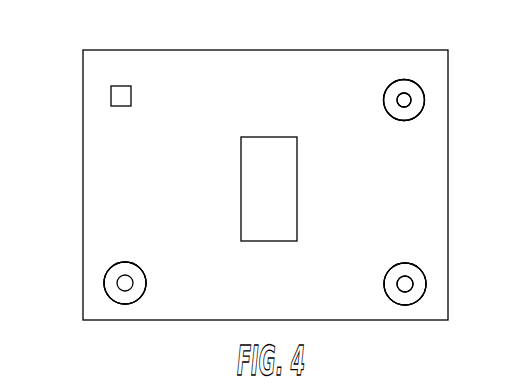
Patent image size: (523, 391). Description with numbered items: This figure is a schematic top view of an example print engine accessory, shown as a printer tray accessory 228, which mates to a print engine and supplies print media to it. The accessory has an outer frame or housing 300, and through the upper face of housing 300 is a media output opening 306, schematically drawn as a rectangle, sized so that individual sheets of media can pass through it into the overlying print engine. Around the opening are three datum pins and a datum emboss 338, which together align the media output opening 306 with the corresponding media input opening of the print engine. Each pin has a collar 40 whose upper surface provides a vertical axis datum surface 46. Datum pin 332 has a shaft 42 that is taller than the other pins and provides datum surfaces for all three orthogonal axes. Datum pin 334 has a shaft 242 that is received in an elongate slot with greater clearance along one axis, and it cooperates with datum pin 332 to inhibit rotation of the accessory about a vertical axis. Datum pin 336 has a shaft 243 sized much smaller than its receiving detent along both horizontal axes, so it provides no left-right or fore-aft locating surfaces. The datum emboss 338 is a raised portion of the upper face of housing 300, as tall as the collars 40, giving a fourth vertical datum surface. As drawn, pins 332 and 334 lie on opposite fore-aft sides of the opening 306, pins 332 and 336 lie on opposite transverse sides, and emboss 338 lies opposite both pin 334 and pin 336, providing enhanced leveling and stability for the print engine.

The printer tray accessory 228 is at (55, 101).
The housing 300 is at (83, 230).
The media output opening 306 is at (270, 137).
The datum emboss 338 is at (132, 95).
The shaft 242 is at (404, 93).
The shaft 243 is at (124, 275).
The shaft 42 is at (402, 277).
The collar 40 is at (404, 121).
The vertical axis datum surface 46 is at (420, 98).
The datum pin 332 is at (428, 288).
The datum pin 334 is at (419, 116).
The datum pin 336 is at (144, 294).